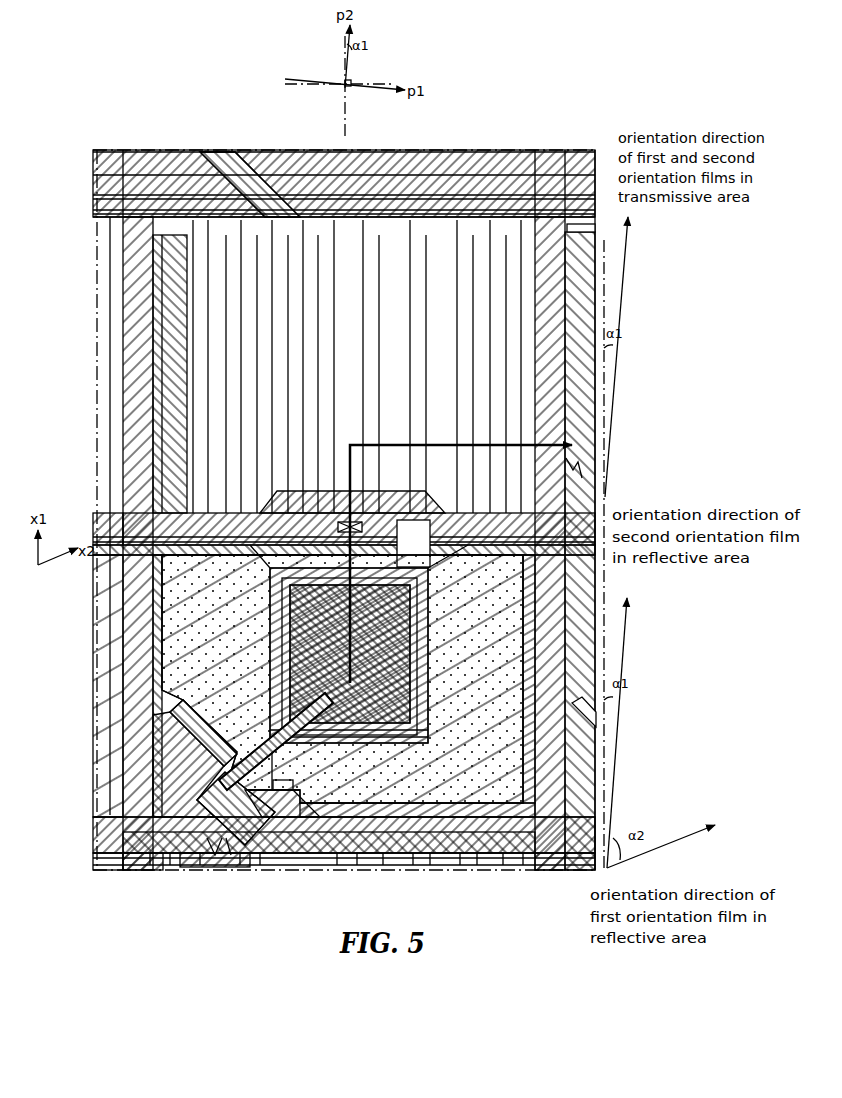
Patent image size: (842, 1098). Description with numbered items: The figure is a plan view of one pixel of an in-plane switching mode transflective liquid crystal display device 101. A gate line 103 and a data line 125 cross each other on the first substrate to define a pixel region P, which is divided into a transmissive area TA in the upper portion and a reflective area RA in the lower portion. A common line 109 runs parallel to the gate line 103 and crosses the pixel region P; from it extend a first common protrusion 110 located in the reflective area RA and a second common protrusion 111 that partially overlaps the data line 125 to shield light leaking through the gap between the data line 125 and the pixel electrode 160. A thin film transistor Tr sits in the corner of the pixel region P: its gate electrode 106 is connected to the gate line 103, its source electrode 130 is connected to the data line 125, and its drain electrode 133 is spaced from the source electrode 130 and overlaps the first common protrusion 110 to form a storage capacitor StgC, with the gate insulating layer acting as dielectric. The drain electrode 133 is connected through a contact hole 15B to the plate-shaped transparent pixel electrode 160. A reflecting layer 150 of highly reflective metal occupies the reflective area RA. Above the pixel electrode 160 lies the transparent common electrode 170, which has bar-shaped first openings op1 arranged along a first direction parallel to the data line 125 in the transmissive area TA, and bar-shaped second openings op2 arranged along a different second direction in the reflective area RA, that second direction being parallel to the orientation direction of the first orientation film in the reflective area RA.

The in-plane switching mode transflective liquid crystal display device 101 is at (572, 98).
The gate line 103 is at (412, 853).
The gate electrode 106 is at (243, 857).
The common line 109 is at (97, 527).
The first common protrusion 110 is at (416, 667).
The second common protrusion 111 is at (165, 330).
The data line 125 is at (125, 372).
The source electrode 130 is at (190, 857).
The drain electrode 133 is at (308, 853).
The reflecting layer 150 is at (584, 528).
The contact hole 15B is at (352, 524).
The pixel electrode 160 is at (176, 470).
The common electrode 170 is at (222, 279).
The pixel region P is at (200, 450).
The transmissive area TA is at (486, 232).
The reflective area RA is at (505, 858).
The thin film transistor Tr is at (148, 872).
The storage capacitor StgC is at (367, 742).
The first openings op1 is at (212, 318).
The second openings op2 is at (227, 617).